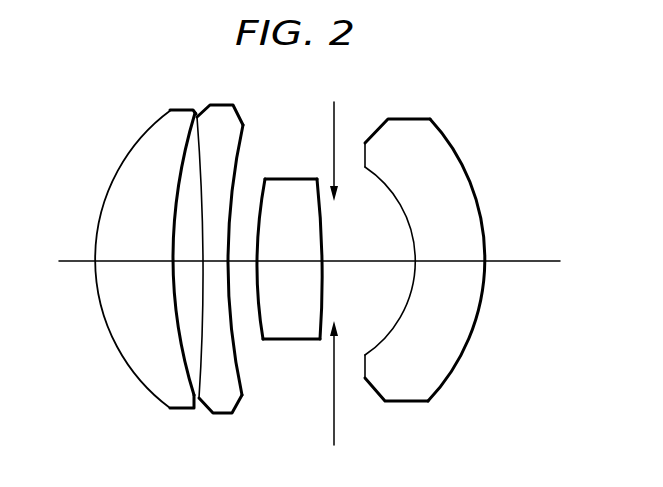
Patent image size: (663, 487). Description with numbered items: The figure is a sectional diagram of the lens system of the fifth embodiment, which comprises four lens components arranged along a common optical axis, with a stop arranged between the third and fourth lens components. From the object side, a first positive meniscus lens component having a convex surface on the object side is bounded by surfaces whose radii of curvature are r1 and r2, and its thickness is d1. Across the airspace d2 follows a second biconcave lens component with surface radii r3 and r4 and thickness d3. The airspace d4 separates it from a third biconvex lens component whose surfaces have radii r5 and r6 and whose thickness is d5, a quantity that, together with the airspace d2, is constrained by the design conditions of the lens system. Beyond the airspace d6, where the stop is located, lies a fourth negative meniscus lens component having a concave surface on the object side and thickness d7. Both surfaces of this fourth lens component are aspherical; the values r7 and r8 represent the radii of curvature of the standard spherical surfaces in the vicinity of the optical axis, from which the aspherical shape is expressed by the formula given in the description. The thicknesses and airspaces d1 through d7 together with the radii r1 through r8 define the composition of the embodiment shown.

The thickness of the first lens component d1 is at (130, 259).
The airspace between the first and second lens components d2 is at (185, 259).
The thickness of the second lens component d3 is at (213, 259).
The airspace between the second and third lens components d4 is at (239, 259).
The thickness of the third lens component d5 is at (280, 259).
The airspace between the third and fourth lens components d6 is at (355, 259).
The thickness of the fourth lens component d7 is at (437, 259).
The radius of curvature of the first surface r1 is at (153, 404).
The radius of curvature of the second surface r2 is at (191, 390).
The radius of curvature of the third surface r3 is at (211, 288).
The radius of curvature of the fourth surface r4 is at (245, 394).
The radius of curvature of the fifth surface r5 is at (263, 341).
The radius of curvature of the sixth surface r6 is at (319, 341).
The radius of curvature of the seventh surface r7 is at (367, 348).
The radius of curvature of the eighth surface r8 is at (448, 378).